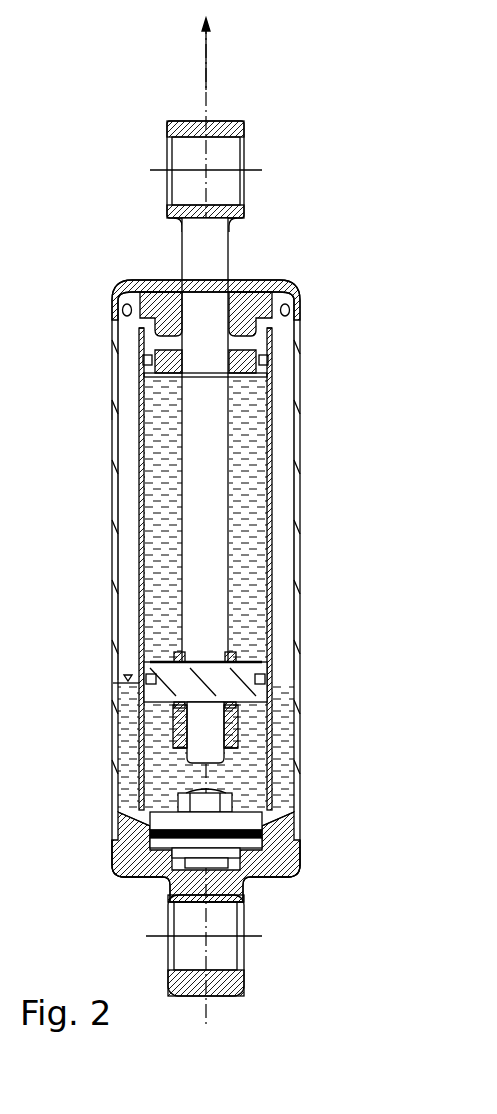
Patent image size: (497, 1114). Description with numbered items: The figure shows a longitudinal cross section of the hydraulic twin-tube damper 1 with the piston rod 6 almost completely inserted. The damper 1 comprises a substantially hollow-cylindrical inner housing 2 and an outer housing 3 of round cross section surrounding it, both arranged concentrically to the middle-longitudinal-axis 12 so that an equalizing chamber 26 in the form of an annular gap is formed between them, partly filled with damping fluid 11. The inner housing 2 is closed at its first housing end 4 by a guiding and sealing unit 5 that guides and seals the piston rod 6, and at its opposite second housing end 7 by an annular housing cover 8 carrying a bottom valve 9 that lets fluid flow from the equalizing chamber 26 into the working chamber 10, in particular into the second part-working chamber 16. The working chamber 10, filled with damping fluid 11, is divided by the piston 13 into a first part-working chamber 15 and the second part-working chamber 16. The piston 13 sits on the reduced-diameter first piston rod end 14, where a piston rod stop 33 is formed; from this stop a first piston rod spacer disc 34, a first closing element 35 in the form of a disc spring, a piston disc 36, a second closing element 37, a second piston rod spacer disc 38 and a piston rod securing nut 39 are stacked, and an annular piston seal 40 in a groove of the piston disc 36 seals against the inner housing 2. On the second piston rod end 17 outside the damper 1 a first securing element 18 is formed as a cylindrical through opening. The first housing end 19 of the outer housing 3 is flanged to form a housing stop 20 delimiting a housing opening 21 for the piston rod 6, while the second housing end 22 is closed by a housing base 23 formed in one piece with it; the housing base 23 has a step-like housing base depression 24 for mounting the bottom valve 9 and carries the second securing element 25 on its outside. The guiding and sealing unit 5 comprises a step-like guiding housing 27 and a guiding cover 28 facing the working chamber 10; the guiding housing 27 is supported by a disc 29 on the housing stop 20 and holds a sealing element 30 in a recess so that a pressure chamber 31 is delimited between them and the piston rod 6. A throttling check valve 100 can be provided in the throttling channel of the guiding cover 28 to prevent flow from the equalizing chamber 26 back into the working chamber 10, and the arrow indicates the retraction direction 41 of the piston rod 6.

The damper 1 is at (112, 212).
The inner housing 2 is at (128, 800).
The outer housing 3 is at (116, 683).
The first housing end 4 is at (289, 340).
The guiding and sealing unit 5 is at (128, 343).
The piston rod 6 is at (220, 260).
The second housing end 7 is at (282, 822).
The housing cover 8 is at (250, 847).
The bottom valve 9 is at (257, 837).
The working chamber 10 is at (244, 748).
The damping fluid 11 is at (287, 765).
The middle-longitudinal-axis 12 is at (206, 432).
The piston 13 is at (148, 682).
The first piston rod end 14 is at (281, 737).
The first part-working chamber 15 is at (150, 395).
The second part-working chamber 16 is at (293, 760).
The second piston rod end 17 is at (240, 229).
The first securing element 18 is at (236, 178).
The first housing end 19 is at (108, 292).
The housing stop 20 is at (250, 289).
The housing opening 21 is at (162, 290).
The second housing end 22 is at (305, 888).
The housing base 23 is at (270, 862).
The housing base depression 24 is at (236, 892).
The second securing element 25 is at (230, 943).
The equalizing chamber 26 is at (287, 570).
The guiding housing 27 is at (265, 325).
The guiding cover 28 is at (147, 365).
The disc 29 is at (284, 297).
The sealing element 30 is at (128, 282).
The pressure chamber 31 is at (145, 312).
The piston rod stop 33 is at (258, 680).
The first piston rod spacer disc 34 is at (130, 660).
The first closing element 35 is at (263, 661).
The piston disc 36 is at (122, 676).
The second closing element 37 is at (160, 707).
The second piston rod spacer disc 38 is at (158, 737).
The piston rod securing nut 39 is at (170, 757).
The piston seal 40 is at (268, 700).
The retraction direction 41 is at (206, 55).
The throttling check valve 100 is at (282, 370).